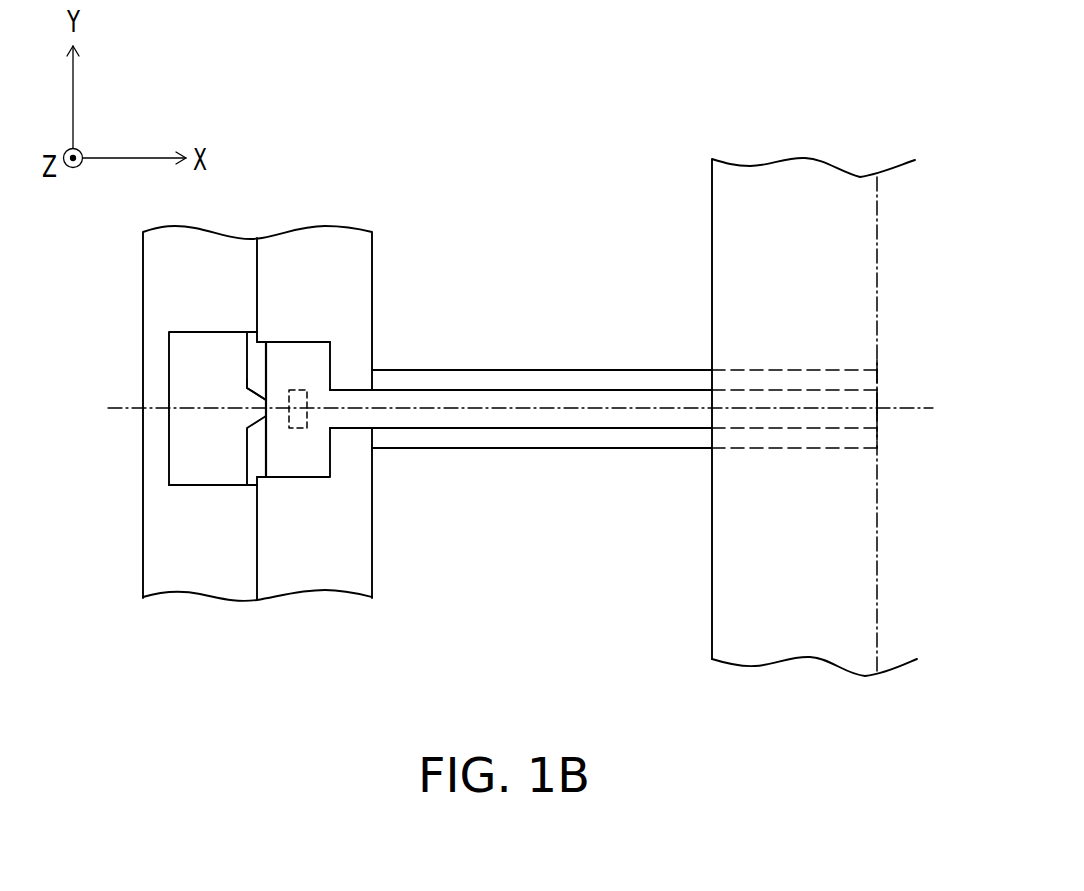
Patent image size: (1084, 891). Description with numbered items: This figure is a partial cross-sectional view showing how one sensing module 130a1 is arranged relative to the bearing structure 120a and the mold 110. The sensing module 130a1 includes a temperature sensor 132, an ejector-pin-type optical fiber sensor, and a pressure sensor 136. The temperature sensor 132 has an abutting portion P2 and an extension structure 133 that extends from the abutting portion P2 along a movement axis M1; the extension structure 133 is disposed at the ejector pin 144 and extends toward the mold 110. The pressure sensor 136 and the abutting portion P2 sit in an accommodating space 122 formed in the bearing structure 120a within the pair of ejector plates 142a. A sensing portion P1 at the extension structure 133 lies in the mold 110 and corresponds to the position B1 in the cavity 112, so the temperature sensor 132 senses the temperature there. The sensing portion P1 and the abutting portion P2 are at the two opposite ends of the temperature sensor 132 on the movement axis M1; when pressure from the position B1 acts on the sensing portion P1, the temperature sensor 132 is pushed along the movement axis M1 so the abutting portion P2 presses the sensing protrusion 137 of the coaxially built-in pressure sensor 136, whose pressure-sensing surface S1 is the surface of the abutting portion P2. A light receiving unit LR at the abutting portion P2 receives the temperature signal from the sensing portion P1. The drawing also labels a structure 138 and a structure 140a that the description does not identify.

The mold 110 is at (768, 180).
The cavity 112 is at (878, 208).
The bearing structure 120a is at (257, 418).
The accommodating space 122 is at (264, 335).
The sensing module 130a1 is at (478, 386).
The temperature sensor 132 is at (297, 478).
The extension structure 133 is at (583, 430).
The pressure sensor 136 is at (210, 487).
The sensing protrusion 137 is at (256, 387).
The plug 138 is at (166, 426).
The housing 140a is at (257, 418).
The ejector plates 142a is at (158, 281).
The ejector pin 144 is at (548, 381).
The light receiving unit LR is at (300, 428).
The pressure-sensing surface S1 is at (264, 449).
The sensing portion P1 is at (862, 360).
The abutting portion P2 is at (301, 334).
The position B1 is at (884, 402).
The movement axis M1 is at (536, 409).